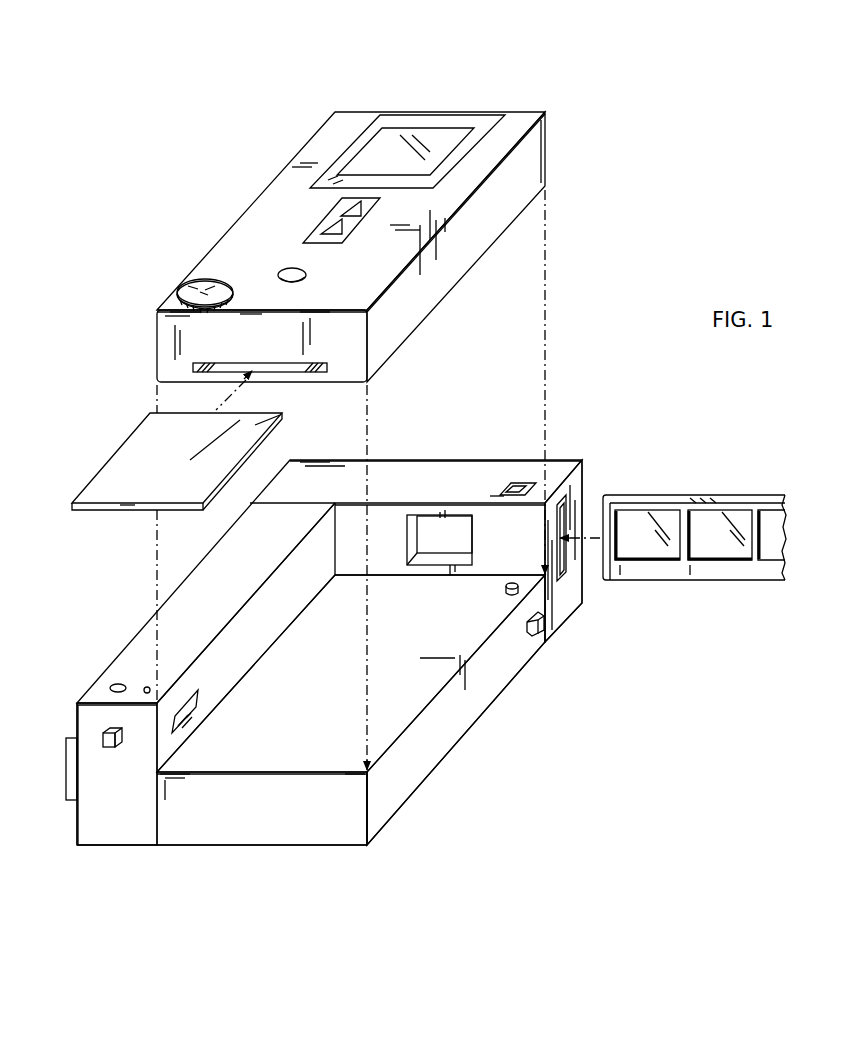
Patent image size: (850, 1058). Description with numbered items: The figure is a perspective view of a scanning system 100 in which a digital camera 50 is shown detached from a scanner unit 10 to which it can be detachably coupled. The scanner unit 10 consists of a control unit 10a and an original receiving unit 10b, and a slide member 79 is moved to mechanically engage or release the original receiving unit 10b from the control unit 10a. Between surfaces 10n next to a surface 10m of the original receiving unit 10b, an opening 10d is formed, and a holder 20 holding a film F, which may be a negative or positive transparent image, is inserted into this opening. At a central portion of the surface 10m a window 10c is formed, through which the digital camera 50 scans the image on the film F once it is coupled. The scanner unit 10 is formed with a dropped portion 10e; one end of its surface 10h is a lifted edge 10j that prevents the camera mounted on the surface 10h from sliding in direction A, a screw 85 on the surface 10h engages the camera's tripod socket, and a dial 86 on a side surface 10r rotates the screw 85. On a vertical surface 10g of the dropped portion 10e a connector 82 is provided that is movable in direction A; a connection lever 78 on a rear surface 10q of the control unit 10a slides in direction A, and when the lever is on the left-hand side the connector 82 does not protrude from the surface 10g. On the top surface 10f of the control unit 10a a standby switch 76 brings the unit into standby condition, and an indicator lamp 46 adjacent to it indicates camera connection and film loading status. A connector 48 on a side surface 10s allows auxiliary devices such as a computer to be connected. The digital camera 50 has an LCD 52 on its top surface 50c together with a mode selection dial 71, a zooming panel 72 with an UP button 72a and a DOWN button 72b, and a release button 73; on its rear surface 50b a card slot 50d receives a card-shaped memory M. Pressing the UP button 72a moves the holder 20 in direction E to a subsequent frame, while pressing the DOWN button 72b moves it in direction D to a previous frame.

The scanning system 100 is at (661, 261).
The scanner unit 10 is at (121, 572).
The control unit 10a is at (178, 819).
The original receiving unit 10b is at (397, 477).
The window 10c is at (445, 527).
The opening 10d is at (567, 509).
The dropped portion 10e is at (268, 742).
The top surface 10f is at (97, 697).
The vertical surface 10g is at (290, 584).
The surface 10h is at (320, 770).
The lifted edge 10j is at (368, 772).
The surface 10m is at (383, 548).
The surfaces 10n is at (268, 478).
The rear surface 10q is at (105, 825).
The side surface 10r is at (455, 705).
The side surface 10s is at (76, 718).
The holder 20 is at (727, 500).
The indicator lamp 46 is at (147, 687).
The connector 48 is at (65, 768).
The digital camera 50 is at (574, 156).
The rear surface 50b is at (163, 344).
The top surface 50c is at (479, 161).
The card slot 50d is at (291, 373).
The LCD 52 is at (379, 143).
The mode selection dial 71 is at (200, 290).
The zooming panel 72 is at (332, 210).
The UP button 72a is at (369, 209).
The DOWN button 72b is at (353, 222).
The release button 73 is at (289, 273).
The standby switch 76 is at (118, 685).
The connection lever 78 is at (111, 748).
The slide member 79 is at (522, 480).
The connector 82 is at (204, 703).
The screw 85 is at (507, 590).
The dial 86 is at (543, 633).
The card-shaped memory M is at (121, 464).
The film F is at (708, 546).
The direction A is at (758, 690).
The direction D is at (729, 745).
The direction E is at (700, 803).